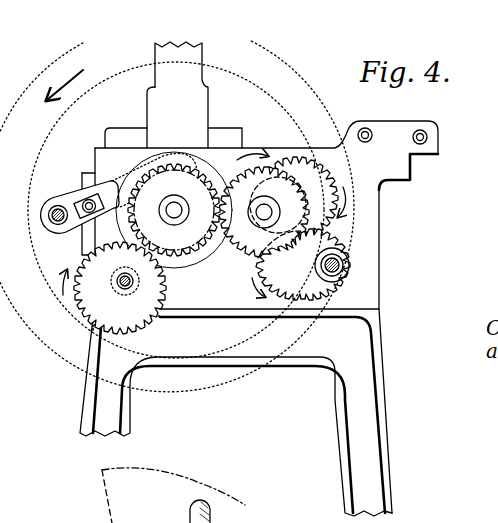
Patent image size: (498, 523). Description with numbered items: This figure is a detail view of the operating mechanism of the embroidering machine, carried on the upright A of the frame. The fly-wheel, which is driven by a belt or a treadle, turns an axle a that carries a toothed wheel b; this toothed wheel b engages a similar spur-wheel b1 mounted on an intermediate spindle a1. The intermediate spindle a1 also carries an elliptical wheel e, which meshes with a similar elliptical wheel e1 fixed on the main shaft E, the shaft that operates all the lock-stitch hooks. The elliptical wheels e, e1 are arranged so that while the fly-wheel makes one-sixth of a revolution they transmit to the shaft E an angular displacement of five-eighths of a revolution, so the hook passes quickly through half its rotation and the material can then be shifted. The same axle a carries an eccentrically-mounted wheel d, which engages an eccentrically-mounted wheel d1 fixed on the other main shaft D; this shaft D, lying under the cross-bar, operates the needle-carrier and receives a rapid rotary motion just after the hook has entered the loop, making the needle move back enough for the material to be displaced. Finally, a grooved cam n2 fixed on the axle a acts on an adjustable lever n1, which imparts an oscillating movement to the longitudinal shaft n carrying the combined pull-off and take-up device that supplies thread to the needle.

The upright A is at (259, 282).
The longitudinal shaft n is at (59, 209).
The adjustable lever n1 is at (110, 238).
The grooved cam n2 is at (163, 160).
The axle a is at (172, 210).
The eccentrically-mounted wheel d is at (174, 216).
The toothed wheel b is at (205, 186).
The intermediate spindle a1 is at (266, 213).
The spur-wheel b1 is at (266, 182).
The elliptical wheel e is at (325, 179).
The elliptical wheel e1 is at (265, 273).
The main shaft E is at (342, 266).
The eccentrically-mounted wheel d1 is at (148, 297).
The main shaft D is at (118, 280).